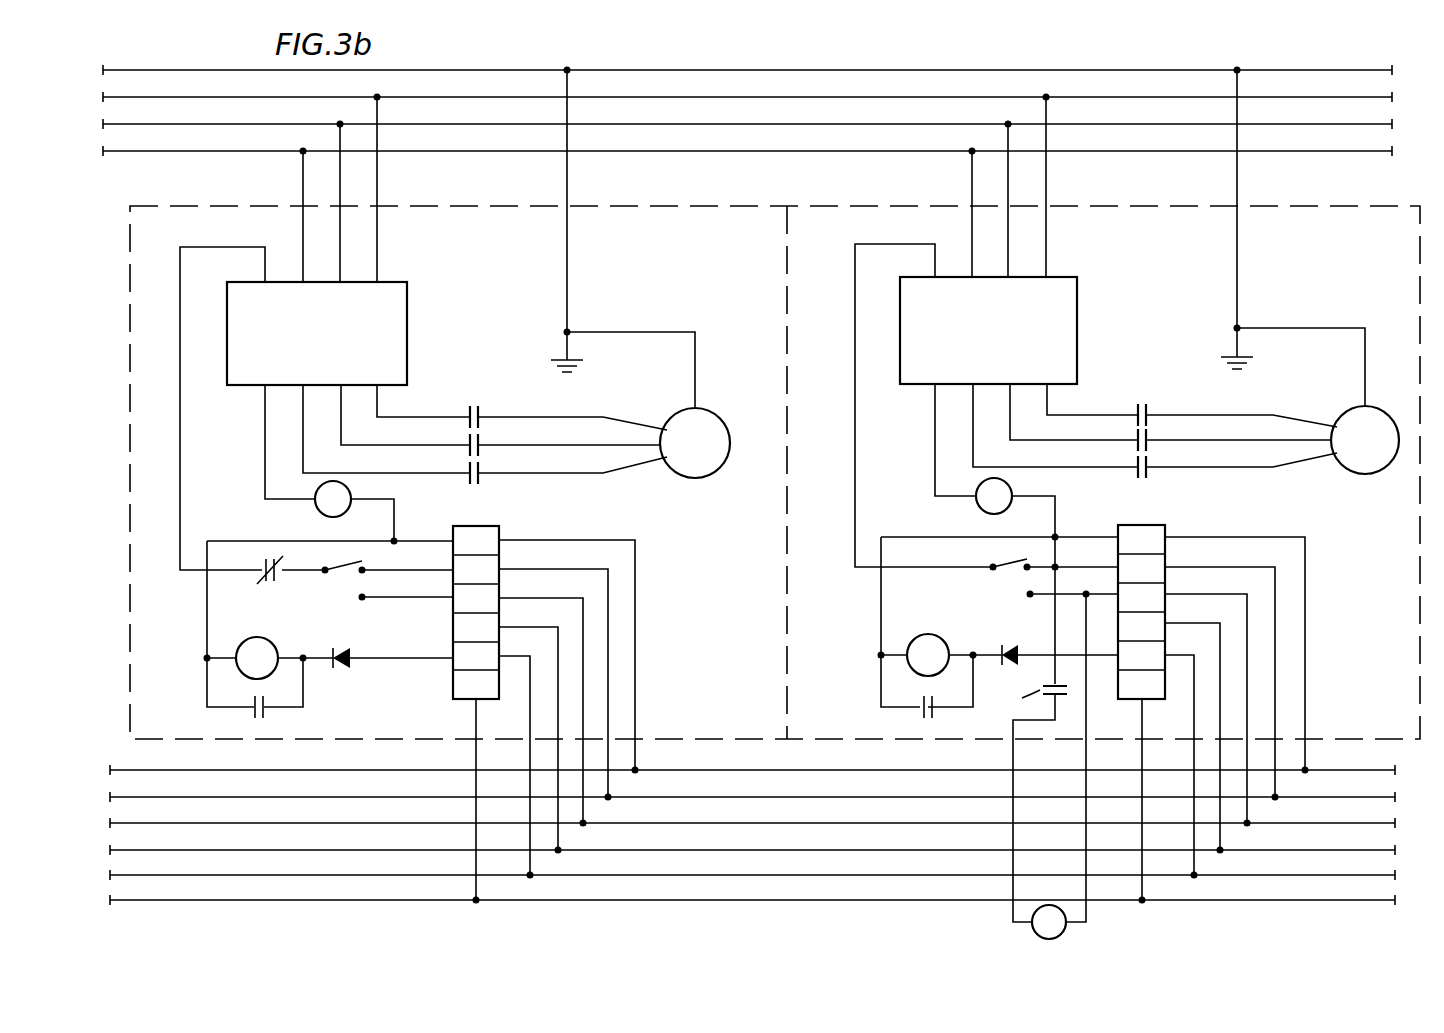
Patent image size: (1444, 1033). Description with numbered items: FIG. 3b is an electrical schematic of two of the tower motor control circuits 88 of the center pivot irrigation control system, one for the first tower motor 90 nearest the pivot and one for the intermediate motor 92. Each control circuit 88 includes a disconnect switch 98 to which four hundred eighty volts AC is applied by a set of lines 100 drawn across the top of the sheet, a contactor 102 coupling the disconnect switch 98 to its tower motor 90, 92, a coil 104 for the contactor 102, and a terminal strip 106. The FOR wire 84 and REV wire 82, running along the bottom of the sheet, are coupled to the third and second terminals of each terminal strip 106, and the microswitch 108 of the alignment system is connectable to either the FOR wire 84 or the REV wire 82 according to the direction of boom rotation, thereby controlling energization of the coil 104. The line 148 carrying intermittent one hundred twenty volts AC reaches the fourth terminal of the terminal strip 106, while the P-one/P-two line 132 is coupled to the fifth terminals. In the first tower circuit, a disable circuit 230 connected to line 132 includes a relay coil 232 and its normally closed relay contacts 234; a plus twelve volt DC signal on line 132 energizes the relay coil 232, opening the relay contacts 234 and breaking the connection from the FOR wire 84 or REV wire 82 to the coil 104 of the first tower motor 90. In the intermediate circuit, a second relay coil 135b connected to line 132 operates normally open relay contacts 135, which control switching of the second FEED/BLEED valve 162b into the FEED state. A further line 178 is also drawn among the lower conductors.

The set of lines 100 is at (1350, 40).
The control circuits 88 is at (808, 206).
The disconnect switch 98 is at (408, 322).
The contactor 102 is at (481, 392).
The first tower motor 90 is at (727, 438).
The intermediate motor 92 is at (1379, 467).
The coil 104 is at (354, 500).
The terminal strip 106 is at (482, 527).
The microswitch 108 is at (366, 581).
The R8 contacts 234 is at (268, 558).
The R8 coil 232 is at (251, 646).
The disable circuit 230 is at (421, 667).
The R9 coil 135b is at (936, 628).
The R9 contacts 135 is at (1069, 691).
The second FEED/BLEED valve 162b is at (1066, 925).
The REV wire 82 is at (921, 783).
The FOR wire 84 is at (937, 823).
The line 148 is at (925, 849).
The line 132 is at (938, 876).
The conductor 178 is at (412, 903).